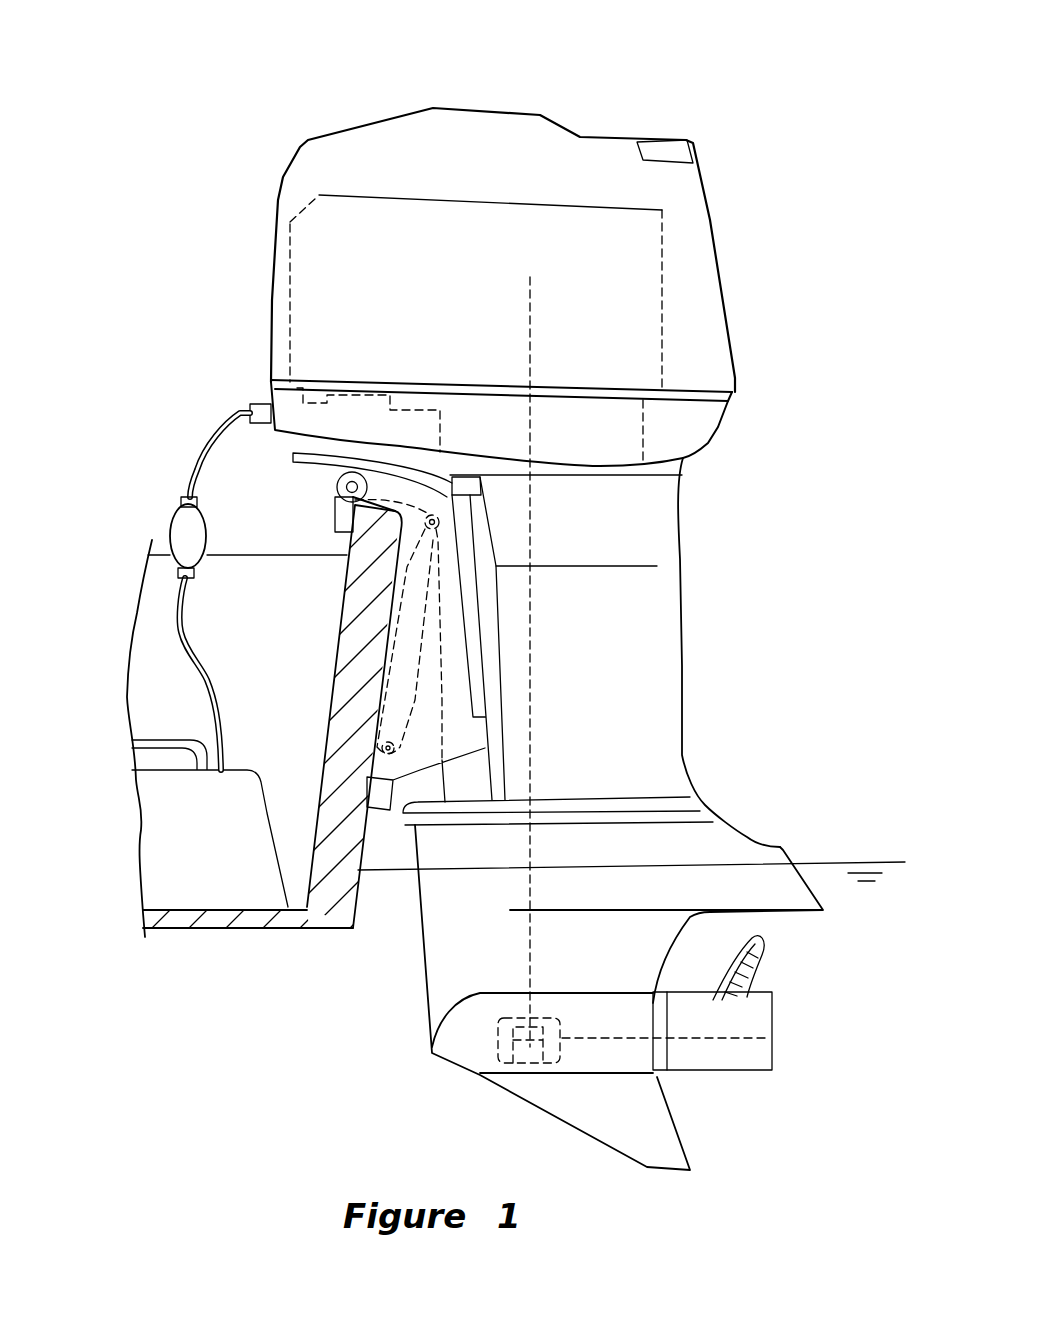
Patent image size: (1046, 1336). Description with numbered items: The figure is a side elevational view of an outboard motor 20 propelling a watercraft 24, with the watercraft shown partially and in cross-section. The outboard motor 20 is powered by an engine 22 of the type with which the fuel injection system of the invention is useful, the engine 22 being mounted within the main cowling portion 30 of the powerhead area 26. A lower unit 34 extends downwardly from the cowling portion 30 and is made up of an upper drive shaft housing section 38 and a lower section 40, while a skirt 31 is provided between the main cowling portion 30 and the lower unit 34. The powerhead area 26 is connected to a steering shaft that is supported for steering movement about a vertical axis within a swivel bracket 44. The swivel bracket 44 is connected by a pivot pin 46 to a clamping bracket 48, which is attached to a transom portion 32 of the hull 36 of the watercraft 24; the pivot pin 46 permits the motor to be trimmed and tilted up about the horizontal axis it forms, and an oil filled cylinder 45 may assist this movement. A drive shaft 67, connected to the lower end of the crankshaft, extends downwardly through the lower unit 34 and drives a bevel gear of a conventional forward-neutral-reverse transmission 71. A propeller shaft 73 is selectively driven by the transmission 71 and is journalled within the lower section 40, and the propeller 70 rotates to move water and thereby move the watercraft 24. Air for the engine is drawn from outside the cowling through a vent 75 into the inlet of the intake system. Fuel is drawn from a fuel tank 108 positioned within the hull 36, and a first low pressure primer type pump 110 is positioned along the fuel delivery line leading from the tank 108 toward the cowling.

The outboard motor 20 is at (263, 203).
The engine 22 is at (310, 200).
The watercraft 24 is at (125, 607).
The powerhead area 26 is at (327, 88).
The main cowling portion 30 is at (303, 147).
The skirt 31 is at (702, 448).
The transom portion 32 is at (360, 877).
The lower unit 34 is at (684, 673).
The hull 36 is at (243, 920).
The drive shaft housing section 38 is at (662, 607).
The lower section 40 is at (740, 850).
The swivel bracket 44 is at (473, 638).
The oil filled cylinder 45 is at (377, 712).
The pivot pin 46 is at (337, 487).
The clamping bracket 48 is at (393, 603).
The drive shaft 67 is at (532, 657).
The propeller 70 is at (763, 980).
The forward-neutral-reverse transmission 71 is at (562, 1023).
The propeller shaft 73 is at (595, 1043).
The vent 75 is at (673, 138).
The fuel tank 108 is at (180, 837).
The primer type pump 110 is at (182, 527).